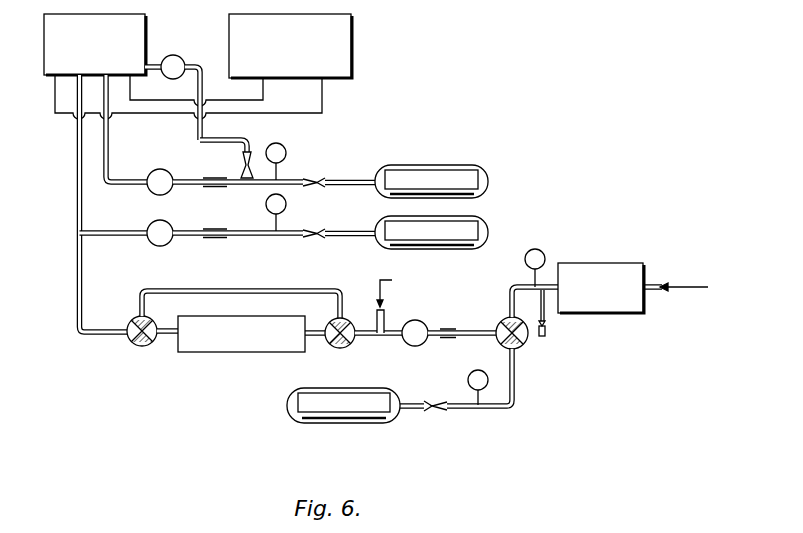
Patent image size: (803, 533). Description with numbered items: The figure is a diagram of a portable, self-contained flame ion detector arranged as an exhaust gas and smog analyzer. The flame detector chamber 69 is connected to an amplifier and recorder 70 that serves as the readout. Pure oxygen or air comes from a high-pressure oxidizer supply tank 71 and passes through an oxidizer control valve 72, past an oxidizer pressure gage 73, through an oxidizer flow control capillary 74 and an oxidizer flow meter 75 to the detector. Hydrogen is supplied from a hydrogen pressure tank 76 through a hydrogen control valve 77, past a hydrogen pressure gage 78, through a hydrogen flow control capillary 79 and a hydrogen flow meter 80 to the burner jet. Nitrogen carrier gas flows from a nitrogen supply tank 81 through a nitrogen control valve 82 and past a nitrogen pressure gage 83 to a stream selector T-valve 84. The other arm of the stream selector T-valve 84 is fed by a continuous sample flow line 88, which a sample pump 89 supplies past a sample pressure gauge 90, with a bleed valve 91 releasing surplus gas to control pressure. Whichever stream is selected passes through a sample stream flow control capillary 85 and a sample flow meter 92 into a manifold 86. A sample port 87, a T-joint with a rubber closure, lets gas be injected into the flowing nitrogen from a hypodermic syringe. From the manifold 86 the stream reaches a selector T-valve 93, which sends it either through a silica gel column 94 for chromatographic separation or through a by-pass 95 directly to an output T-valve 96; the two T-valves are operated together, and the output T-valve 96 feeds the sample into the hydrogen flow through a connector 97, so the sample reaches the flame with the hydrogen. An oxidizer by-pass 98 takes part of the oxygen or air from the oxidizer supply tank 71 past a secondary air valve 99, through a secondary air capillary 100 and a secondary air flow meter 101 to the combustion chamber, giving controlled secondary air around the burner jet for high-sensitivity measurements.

The flame detector chamber 69 is at (148, 33).
The amplifier and recorder 70 is at (353, 45).
The oxidizer supply tank 71 is at (430, 164).
The oxidizer control valve 72 is at (320, 176).
The oxidizer pressure gage 73 is at (287, 153).
The oxidizer flow control capillary 74 is at (220, 187).
The oxidizer flow meter 75 is at (166, 169).
The hydrogen pressure tank 76 is at (489, 223).
The hydrogen control valve 77 is at (322, 228).
The hydrogen pressure gage 78 is at (287, 205).
The hydrogen flow control capillary 79 is at (222, 238).
The hydrogen flow meter 80 is at (162, 246).
The nitrogen supply tank 81 is at (345, 423).
The nitrogen control valve 82 is at (432, 412).
The nitrogen pressure gage 83 is at (468, 381).
The stream selector T-valve 84 is at (523, 347).
The sample stream flow control capillary 85 is at (448, 329).
The manifold 86 is at (375, 340).
The sample port 87 is at (385, 315).
The continuous sample flow line 88 is at (512, 283).
The sample pump 89 is at (610, 263).
The sample pressure gauge 90 is at (545, 255).
The bleed valve 91 is at (548, 325).
The sample flow meter 92 is at (420, 346).
The selector T-valve 93 is at (338, 348).
The silica gel column 94 is at (255, 316).
The by-pass 95 is at (290, 288).
The output T-valve 96 is at (143, 346).
The connector 97 is at (77, 180).
The oxidizer by-pass 98 is at (204, 72).
The secondary air valve 99 is at (240, 168).
The secondary air capillary 100 is at (225, 137).
The secondary air flow meter 101 is at (181, 56).